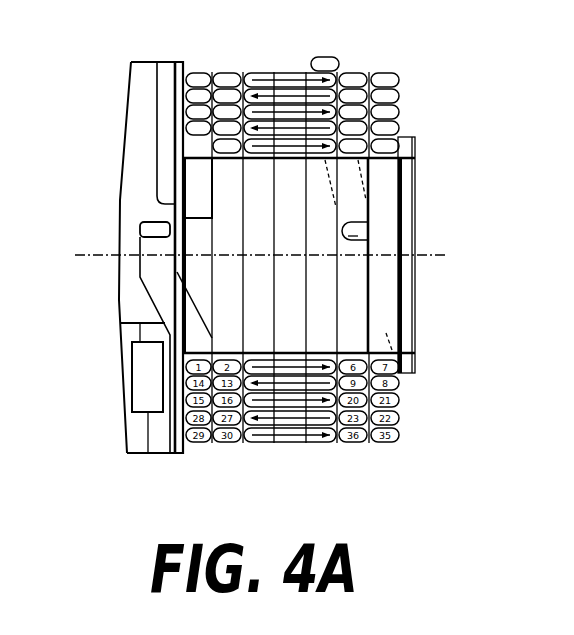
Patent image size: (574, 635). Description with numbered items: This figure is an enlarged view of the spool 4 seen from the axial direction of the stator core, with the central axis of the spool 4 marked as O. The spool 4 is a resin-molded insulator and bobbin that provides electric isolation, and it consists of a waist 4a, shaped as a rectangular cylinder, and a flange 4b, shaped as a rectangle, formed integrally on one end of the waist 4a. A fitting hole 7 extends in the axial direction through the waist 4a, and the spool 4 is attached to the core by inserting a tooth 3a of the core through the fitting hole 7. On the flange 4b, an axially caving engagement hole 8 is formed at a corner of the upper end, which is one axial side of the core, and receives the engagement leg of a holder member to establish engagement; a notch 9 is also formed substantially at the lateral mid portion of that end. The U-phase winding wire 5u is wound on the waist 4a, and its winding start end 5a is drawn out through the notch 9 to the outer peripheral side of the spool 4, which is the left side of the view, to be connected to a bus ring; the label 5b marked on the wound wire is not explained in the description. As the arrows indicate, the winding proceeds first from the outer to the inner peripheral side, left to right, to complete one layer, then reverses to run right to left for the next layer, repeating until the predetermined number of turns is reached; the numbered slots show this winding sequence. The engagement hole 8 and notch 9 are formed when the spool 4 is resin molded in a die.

The spool 4 is at (117, 80).
The waist 4a is at (403, 362).
The flange 4b is at (138, 455).
The winding start end 5a is at (140, 224).
The stator core 5b is at (386, 178).
The U-phase winding wire 5u is at (402, 79).
The teeth 3a is at (418, 296).
The fitting hole 7 is at (418, 335).
The engagement hole 8 is at (160, 402).
The notch 9 is at (131, 318).
The central axis O is at (443, 255).